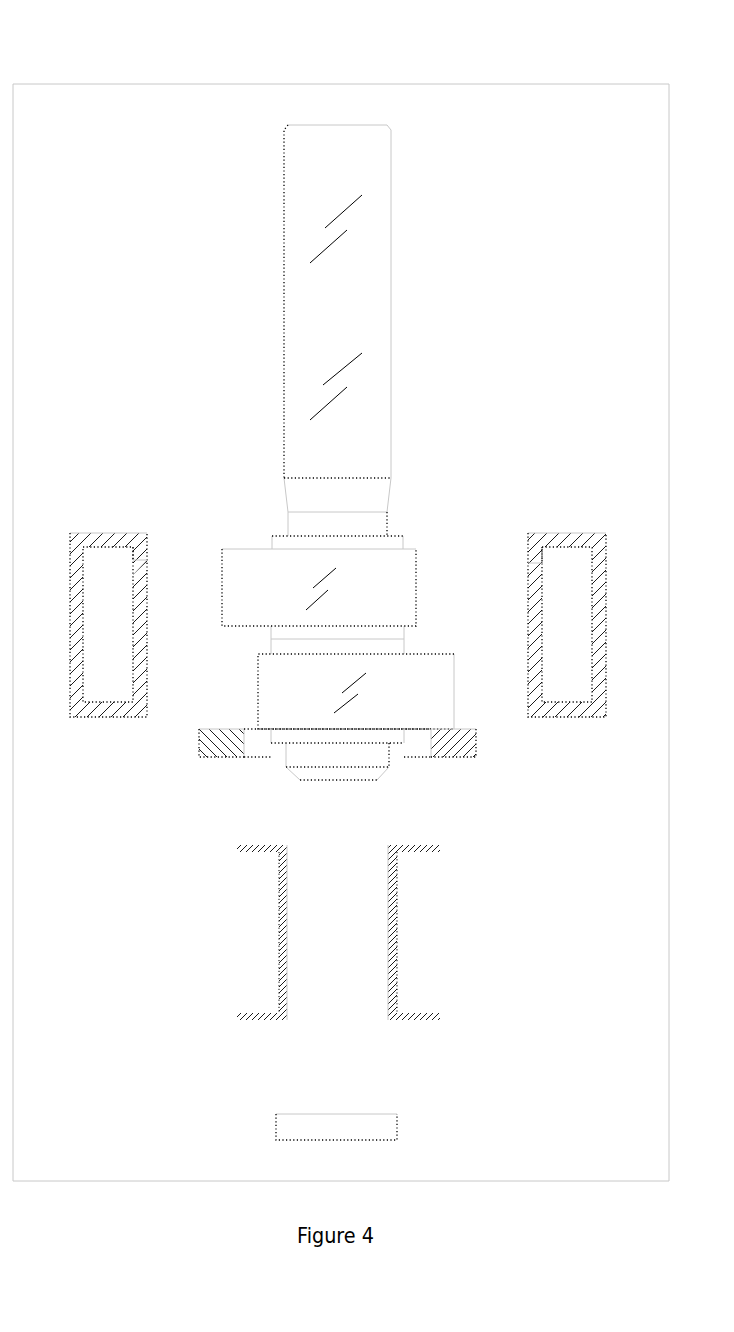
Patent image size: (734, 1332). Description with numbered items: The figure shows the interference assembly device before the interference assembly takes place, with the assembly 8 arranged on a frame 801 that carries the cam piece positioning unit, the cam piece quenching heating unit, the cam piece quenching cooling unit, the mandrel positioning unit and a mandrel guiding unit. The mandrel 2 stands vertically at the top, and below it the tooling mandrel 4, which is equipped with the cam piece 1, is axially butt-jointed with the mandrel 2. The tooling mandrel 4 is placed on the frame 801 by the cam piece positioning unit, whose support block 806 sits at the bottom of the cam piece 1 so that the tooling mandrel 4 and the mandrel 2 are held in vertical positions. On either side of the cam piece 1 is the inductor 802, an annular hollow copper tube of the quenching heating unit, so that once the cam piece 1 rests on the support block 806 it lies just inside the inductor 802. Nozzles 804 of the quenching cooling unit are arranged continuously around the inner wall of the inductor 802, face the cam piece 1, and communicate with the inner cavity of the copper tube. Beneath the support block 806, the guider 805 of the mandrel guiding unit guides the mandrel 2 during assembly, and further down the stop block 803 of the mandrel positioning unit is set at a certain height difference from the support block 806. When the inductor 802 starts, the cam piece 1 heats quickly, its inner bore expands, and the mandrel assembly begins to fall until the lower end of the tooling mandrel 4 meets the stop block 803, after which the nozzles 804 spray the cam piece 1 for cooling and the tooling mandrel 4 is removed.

The housing 8 is at (178, 84).
The frame 801 is at (120, 250).
The mandrel 2 is at (391, 307).
The cam piece 1 is at (416, 588).
The support block 806 is at (450, 758).
The tooling mandrel 4 is at (308, 781).
The guider 805 is at (287, 912).
The stop block 803 is at (370, 1114).
The inductor 802 is at (108, 533).
The nozzles 804 is at (148, 560).